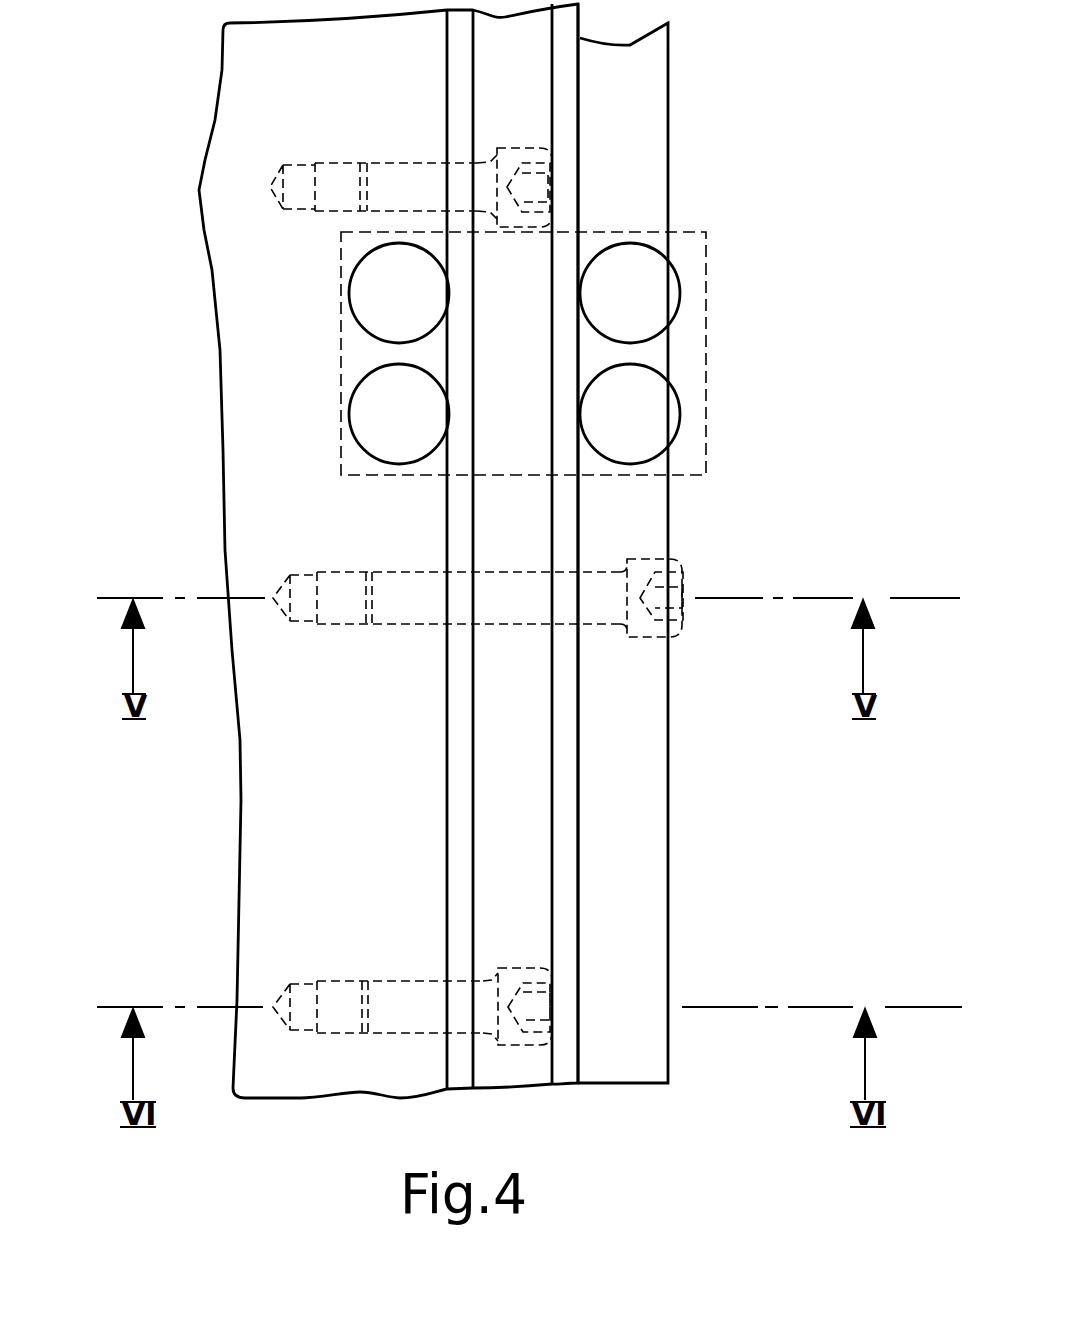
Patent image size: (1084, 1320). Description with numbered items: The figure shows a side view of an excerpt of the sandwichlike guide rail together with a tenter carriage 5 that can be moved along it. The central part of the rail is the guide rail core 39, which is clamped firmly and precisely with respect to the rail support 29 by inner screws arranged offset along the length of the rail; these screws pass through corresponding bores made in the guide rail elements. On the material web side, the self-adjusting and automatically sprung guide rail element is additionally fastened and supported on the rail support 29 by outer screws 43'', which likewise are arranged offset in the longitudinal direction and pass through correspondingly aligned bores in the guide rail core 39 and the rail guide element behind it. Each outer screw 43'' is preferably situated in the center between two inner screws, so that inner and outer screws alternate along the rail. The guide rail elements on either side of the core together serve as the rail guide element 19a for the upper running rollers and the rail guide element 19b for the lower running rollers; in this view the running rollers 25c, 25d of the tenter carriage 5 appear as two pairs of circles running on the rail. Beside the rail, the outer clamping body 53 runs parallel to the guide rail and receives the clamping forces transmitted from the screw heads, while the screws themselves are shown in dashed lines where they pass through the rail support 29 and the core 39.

The tenter carriage 5 is at (705, 340).
The rail guide element 19a is at (463, 813).
The rail guide element 19b is at (570, 828).
The running roller 25c is at (372, 417).
The running roller 25d is at (652, 292).
The rail support 29 is at (318, 738).
The guide rail core 39 is at (538, 728).
The outer screw 43'' is at (521, 573).
The outer clamping body 53 is at (645, 738).